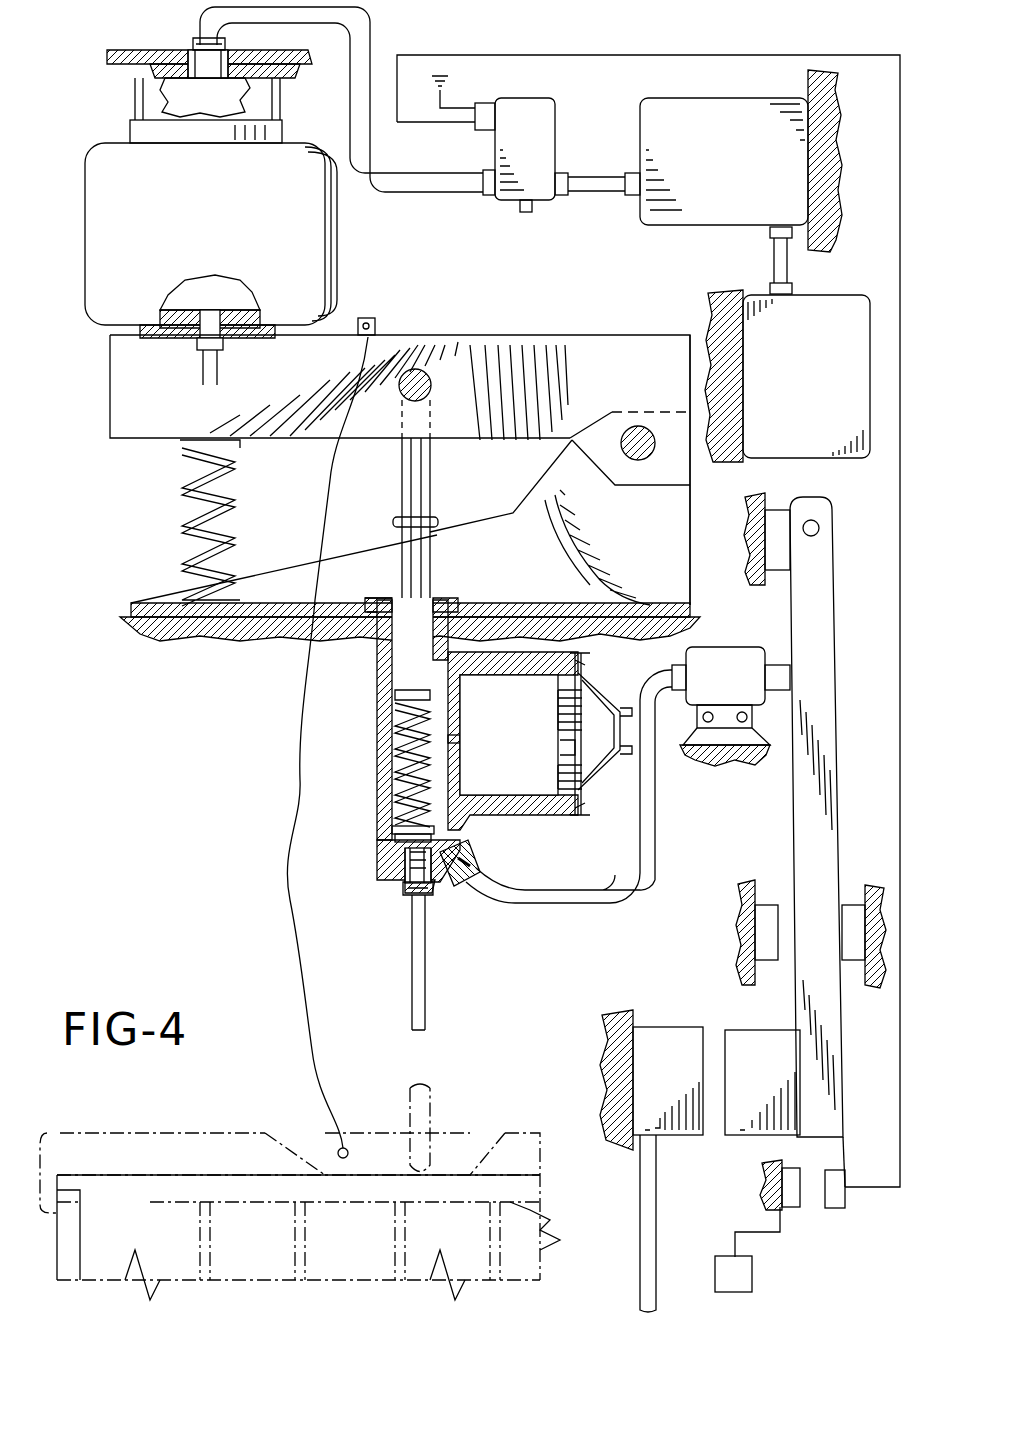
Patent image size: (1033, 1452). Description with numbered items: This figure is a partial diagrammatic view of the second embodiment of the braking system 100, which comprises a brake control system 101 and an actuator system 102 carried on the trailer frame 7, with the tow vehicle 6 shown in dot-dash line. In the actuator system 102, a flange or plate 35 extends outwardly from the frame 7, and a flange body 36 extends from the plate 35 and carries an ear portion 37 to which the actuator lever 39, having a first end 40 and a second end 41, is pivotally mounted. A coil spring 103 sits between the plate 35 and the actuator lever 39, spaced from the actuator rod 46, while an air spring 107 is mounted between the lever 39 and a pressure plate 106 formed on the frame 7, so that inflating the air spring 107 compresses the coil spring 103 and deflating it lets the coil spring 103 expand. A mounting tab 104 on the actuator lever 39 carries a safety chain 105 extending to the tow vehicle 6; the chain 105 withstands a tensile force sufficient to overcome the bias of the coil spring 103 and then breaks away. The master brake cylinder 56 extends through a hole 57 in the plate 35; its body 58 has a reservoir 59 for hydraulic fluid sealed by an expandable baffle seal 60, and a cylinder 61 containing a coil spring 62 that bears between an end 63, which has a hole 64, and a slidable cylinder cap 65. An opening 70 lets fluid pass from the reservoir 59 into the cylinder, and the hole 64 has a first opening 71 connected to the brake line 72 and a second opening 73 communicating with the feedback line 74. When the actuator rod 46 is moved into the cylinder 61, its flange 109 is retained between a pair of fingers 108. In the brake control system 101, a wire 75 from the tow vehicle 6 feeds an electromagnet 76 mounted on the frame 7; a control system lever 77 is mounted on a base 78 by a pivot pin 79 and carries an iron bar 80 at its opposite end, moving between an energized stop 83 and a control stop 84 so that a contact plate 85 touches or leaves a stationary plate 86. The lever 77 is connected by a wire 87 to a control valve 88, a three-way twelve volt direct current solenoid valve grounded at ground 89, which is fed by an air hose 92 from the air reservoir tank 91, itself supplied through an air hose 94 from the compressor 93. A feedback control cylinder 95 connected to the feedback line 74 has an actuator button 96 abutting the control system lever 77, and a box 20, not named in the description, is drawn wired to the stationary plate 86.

The tow vehicle 6 is at (160, 1135).
The frame 7 is at (130, 55).
The controller 20 is at (738, 1292).
The flange 35 is at (540, 604).
The flange body 36 is at (655, 531).
The ear portion 37 is at (628, 412).
The actuator lever 39 is at (522, 335).
The first end 40 is at (641, 335).
The second end 41 is at (125, 385).
The actuator rod 46 is at (430, 549).
The master brake cylinder 56 is at (576, 836).
The hole 57 is at (443, 600).
The body 58 is at (538, 813).
The reservoir 59 is at (588, 796).
The expandable baffle seal 60 is at (585, 765).
The cylinder 61 is at (395, 776).
The coil spring 62 is at (398, 812).
The end 63 is at (390, 838).
The hole 64 is at (410, 868).
The cylinder cap 65 is at (400, 693).
The opening 70 is at (452, 745).
The first opening 71 is at (415, 895).
The brake line 72 is at (426, 990).
The second opening 73 is at (466, 886).
The feedback line 74 is at (539, 905).
The wire 75 is at (644, 1219).
The electromagnet 76 is at (668, 1081).
The control system lever 77 is at (823, 631).
The base 78 is at (778, 548).
The pivot pin 79 is at (810, 520).
The iron bar 80 is at (762, 1082).
The energized stop 83 is at (768, 905).
The control stop 84 is at (855, 905).
The contact plate 85 is at (838, 1209).
The stationary plate 86 is at (793, 1208).
The wire 87 is at (688, 55).
The control valve 88 is at (521, 155).
The ground 89 is at (448, 90).
The air reservoir tank 91 is at (724, 161).
The air hose 92 is at (597, 181).
The compressor 93 is at (806, 376).
The air hose 94 is at (790, 273).
The feedback control cylinder 95 is at (721, 696).
The actuator button 96 is at (786, 678).
The braking system 100 is at (462, 38).
The brake control system 101 is at (856, 1145).
The actuator system 102 is at (275, 652).
The coil spring 103 is at (183, 548).
The mounting tab 104 is at (378, 320).
The safety chain 105 is at (285, 872).
The pressure plate 106 is at (127, 78).
The air spring 107 is at (211, 231).
The fingers 108 is at (392, 598).
The flange 109 is at (394, 523).